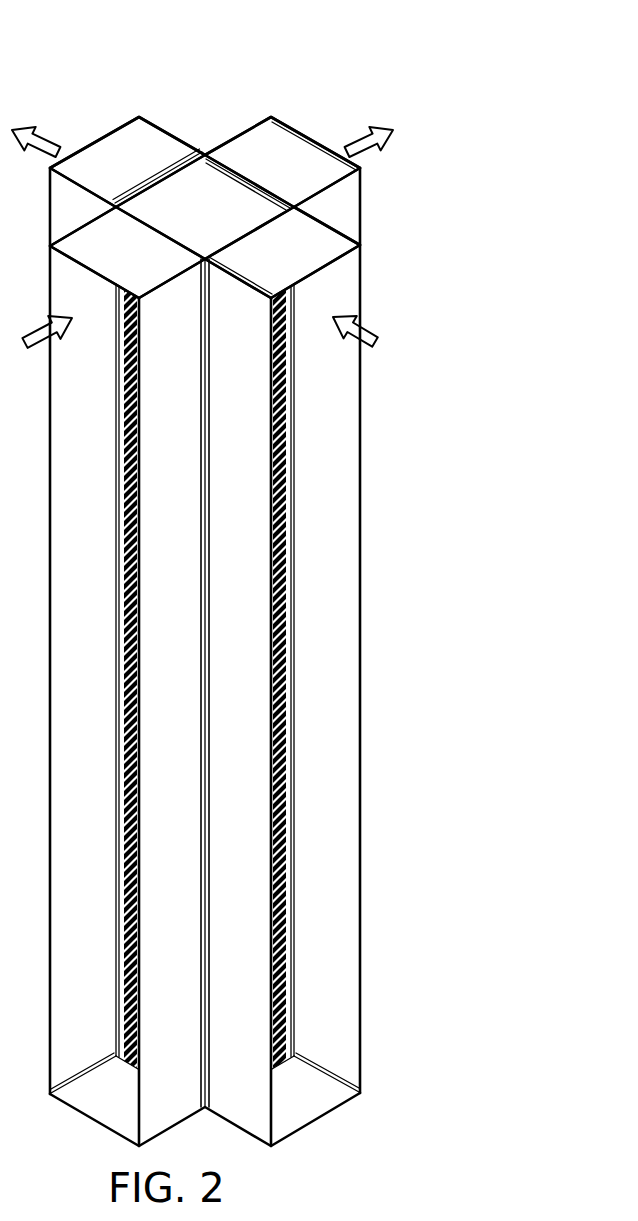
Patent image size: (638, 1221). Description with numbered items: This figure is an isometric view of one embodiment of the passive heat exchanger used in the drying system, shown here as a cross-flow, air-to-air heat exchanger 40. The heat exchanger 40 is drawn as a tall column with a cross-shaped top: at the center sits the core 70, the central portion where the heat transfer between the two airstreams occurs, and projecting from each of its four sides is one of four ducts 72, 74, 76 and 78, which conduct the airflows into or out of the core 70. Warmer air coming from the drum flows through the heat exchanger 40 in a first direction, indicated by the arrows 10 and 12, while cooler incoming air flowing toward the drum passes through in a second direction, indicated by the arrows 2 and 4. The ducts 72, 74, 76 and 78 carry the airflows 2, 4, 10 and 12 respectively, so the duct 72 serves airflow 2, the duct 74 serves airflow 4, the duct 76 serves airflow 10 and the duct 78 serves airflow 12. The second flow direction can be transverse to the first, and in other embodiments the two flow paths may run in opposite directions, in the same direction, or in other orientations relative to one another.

The heat exchanger 40 is at (202, 80).
The core 70 is at (185, 227).
The duct 72 is at (108, 264).
The duct 74 is at (269, 176).
The duct 76 is at (271, 264).
The duct 78 is at (108, 176).
The arrow 2 is at (30, 336).
The arrow 4 is at (352, 140).
The arrow 10 is at (378, 335).
The arrow 12 is at (50, 143).